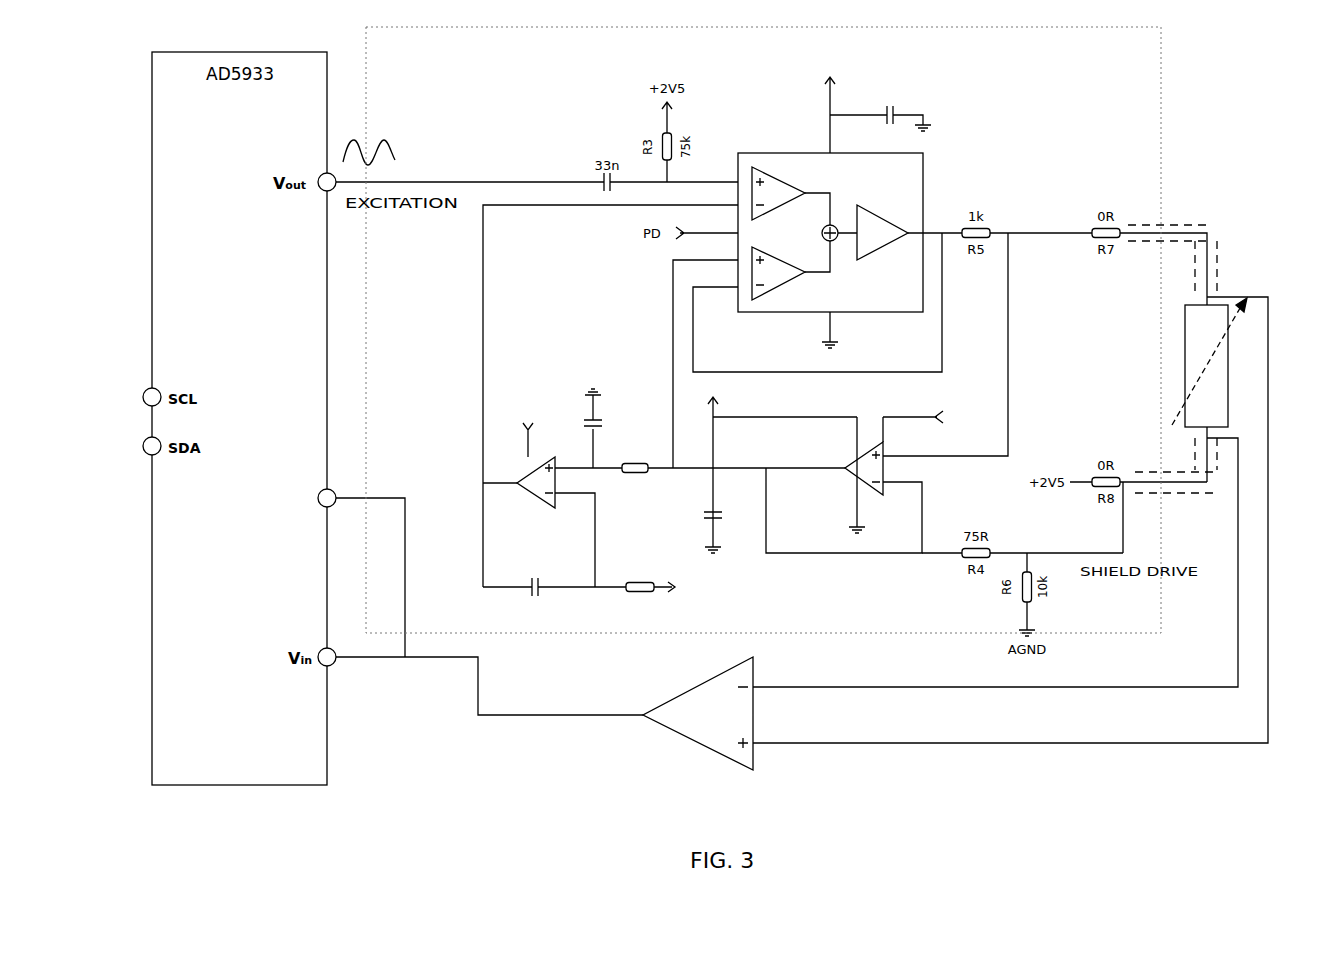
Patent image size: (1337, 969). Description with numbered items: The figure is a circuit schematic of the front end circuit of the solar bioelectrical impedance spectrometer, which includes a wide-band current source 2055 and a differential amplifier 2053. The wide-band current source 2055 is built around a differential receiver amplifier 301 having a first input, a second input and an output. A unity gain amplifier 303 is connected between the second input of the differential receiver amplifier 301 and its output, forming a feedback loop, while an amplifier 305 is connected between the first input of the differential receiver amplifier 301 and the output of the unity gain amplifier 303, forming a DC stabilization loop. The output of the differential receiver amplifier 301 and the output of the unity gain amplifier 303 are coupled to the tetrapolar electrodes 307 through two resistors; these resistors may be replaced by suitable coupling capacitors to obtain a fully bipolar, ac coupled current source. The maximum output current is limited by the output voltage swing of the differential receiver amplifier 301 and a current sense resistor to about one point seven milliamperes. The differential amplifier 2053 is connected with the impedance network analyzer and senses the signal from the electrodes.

The differential receiver amplifier 301 is at (892, 220).
The unity gain amplifier 303 is at (885, 493).
The amplifier 305 is at (524, 456).
The tetrapolar electrodes 307 is at (1228, 293).
The differential amplifier 2053 is at (686, 742).
The wide-band current source 2055 is at (1143, 99).